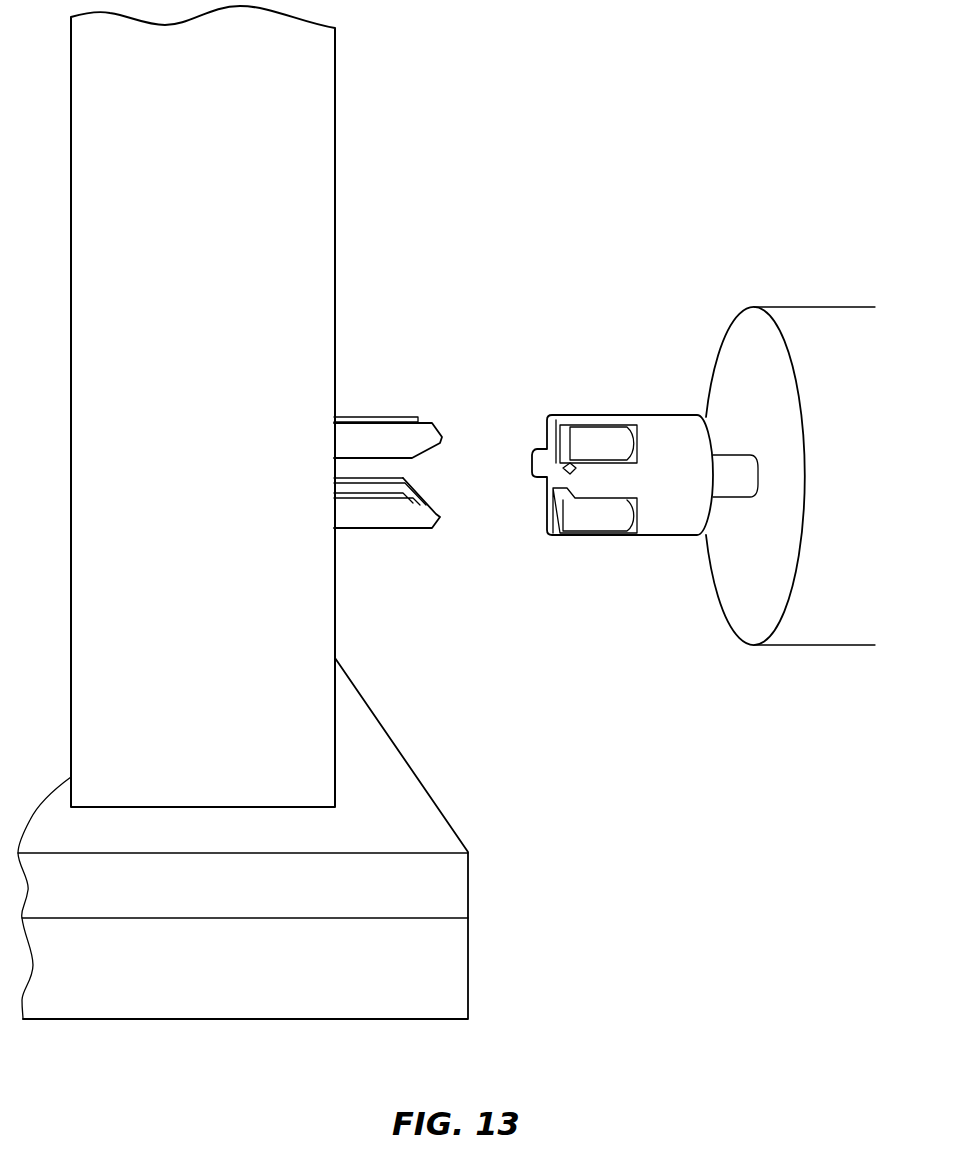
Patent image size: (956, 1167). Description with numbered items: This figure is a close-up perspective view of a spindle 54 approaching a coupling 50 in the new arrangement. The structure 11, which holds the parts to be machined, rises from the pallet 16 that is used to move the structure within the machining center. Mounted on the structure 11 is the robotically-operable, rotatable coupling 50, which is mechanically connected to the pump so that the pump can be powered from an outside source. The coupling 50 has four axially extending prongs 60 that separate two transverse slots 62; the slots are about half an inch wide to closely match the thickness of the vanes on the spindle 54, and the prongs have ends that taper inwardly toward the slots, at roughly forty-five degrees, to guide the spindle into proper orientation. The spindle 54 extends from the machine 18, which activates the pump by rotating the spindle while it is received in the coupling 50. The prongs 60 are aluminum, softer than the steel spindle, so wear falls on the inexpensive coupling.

The structure 11 is at (310, 208).
The pallet 16 is at (448, 961).
The machine 18 is at (797, 322).
The coupling 50 is at (364, 447).
The spindle 54 is at (652, 432).
The prongs 60 is at (430, 505).
The slots 62 is at (418, 420).